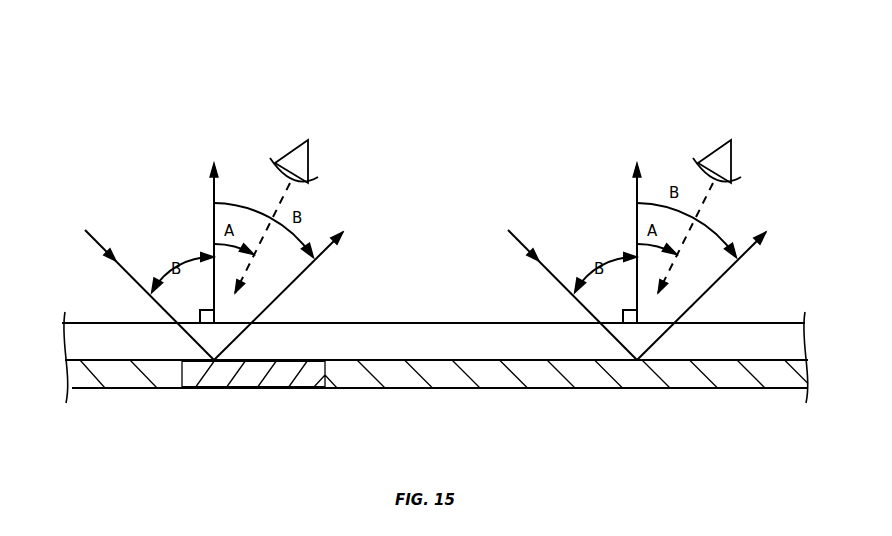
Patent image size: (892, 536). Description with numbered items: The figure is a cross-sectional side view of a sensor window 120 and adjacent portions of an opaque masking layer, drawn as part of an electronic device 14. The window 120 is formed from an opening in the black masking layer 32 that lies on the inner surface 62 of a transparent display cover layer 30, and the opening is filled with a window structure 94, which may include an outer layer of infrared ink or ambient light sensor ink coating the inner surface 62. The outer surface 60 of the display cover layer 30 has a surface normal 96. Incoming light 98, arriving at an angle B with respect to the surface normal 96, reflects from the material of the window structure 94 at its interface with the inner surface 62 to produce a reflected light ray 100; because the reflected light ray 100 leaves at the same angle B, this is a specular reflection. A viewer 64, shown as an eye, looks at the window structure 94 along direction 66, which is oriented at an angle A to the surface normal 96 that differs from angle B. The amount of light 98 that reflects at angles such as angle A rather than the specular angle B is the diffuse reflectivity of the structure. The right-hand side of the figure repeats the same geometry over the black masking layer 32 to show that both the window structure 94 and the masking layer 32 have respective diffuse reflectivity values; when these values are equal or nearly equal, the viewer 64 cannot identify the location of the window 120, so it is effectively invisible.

The electronic device 14 is at (665, 83).
The display cover layer 30 is at (792, 340).
The black masking layer 32 is at (647, 383).
The outer surface 60 is at (110, 323).
The inner surface 62 is at (78, 358).
The viewer 64 is at (317, 160).
The direction 66 is at (277, 205).
The window structure 94 is at (230, 382).
The surface normal 96 is at (212, 190).
The incoming light 98 is at (126, 268).
The reflected light ray 100 is at (290, 287).
The window 120 is at (200, 435).